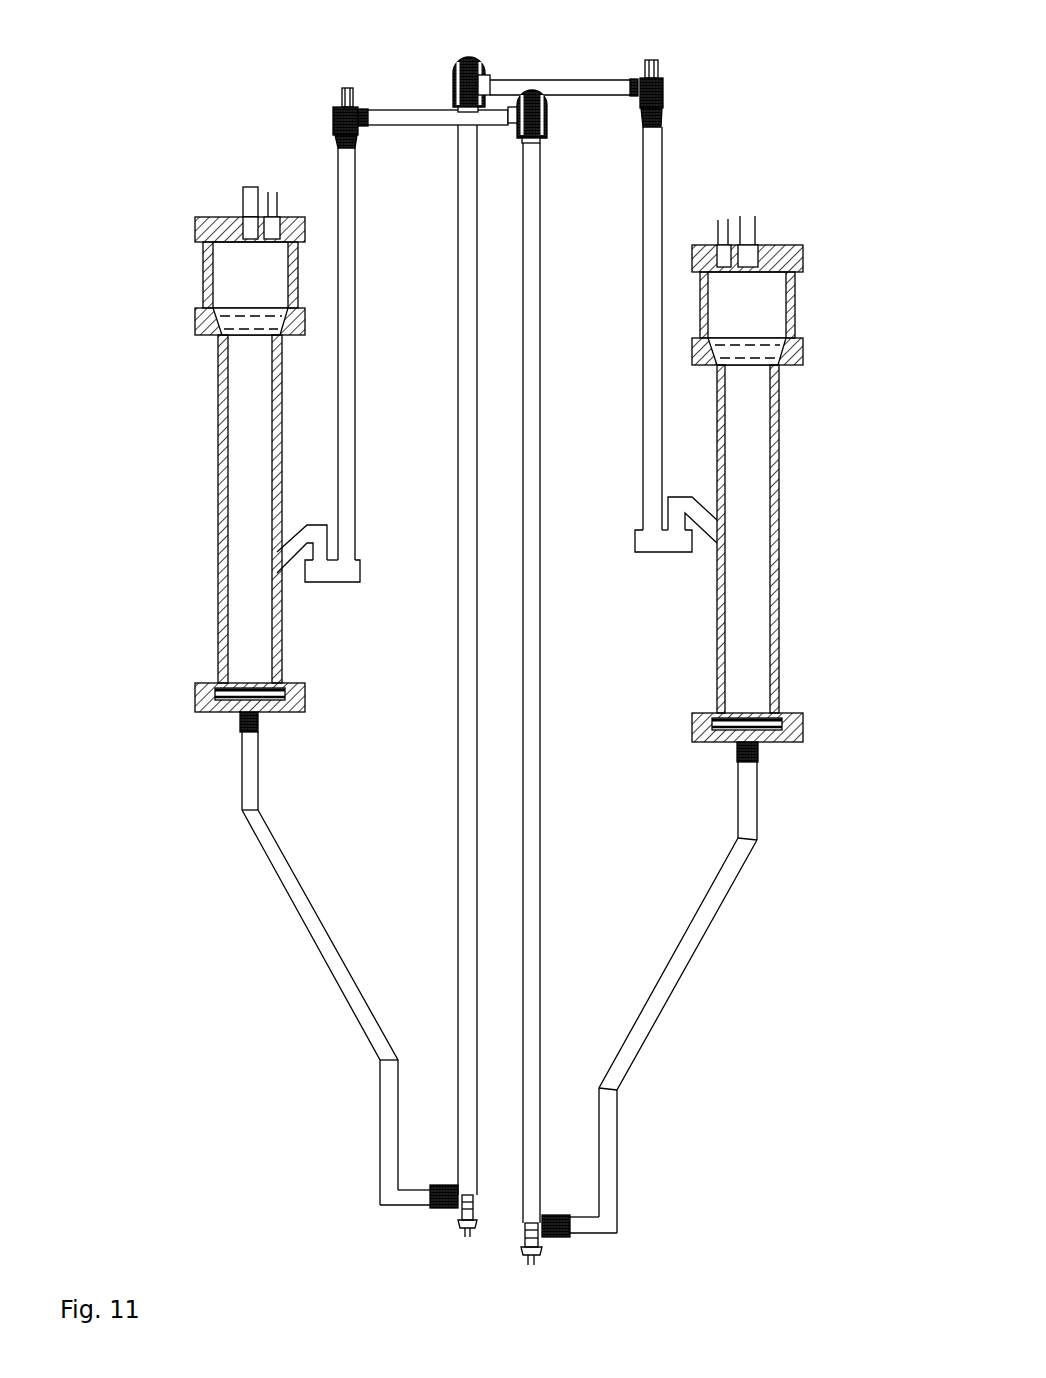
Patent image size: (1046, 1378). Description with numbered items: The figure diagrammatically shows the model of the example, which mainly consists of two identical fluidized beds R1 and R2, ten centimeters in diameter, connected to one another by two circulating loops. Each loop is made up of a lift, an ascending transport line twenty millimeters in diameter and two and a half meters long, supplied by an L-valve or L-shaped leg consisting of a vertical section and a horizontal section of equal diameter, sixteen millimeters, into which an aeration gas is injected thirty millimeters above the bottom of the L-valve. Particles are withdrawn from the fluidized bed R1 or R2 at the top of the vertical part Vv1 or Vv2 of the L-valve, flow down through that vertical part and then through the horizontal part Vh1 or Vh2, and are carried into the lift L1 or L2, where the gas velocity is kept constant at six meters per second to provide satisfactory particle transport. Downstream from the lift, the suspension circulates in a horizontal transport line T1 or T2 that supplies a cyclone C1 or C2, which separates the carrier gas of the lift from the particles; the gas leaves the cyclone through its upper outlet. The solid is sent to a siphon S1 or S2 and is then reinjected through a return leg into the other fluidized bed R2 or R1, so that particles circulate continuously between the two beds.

The cyclone C1 is at (327, 118).
The horizontal transport line T1 is at (398, 117).
The horizontal transport line T2 is at (590, 80).
The cyclone C2 is at (662, 80).
The fluidized bed R1 is at (262, 543).
The fluidized bed R2 is at (760, 575).
The siphon S1 is at (360, 555).
The siphon S2 is at (633, 525).
The lift L1 is at (450, 747).
The lift L2 is at (523, 727).
The vertical part of the L-valve Vv1 is at (380, 1133).
The horizontal part of the L-valve Vh1 is at (398, 1205).
The vertical part of the L-valve Vv2 is at (607, 1187).
The horizontal part of the L-valve Vh2 is at (592, 1220).